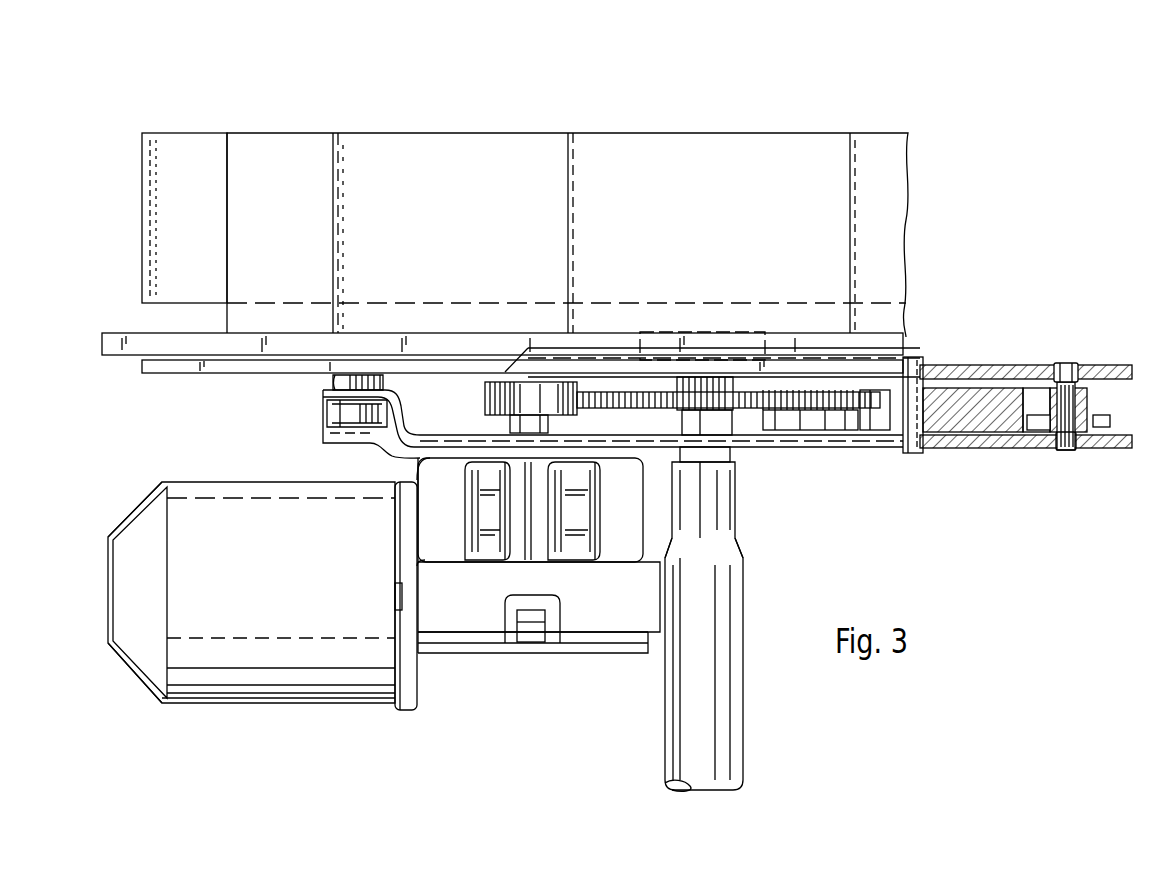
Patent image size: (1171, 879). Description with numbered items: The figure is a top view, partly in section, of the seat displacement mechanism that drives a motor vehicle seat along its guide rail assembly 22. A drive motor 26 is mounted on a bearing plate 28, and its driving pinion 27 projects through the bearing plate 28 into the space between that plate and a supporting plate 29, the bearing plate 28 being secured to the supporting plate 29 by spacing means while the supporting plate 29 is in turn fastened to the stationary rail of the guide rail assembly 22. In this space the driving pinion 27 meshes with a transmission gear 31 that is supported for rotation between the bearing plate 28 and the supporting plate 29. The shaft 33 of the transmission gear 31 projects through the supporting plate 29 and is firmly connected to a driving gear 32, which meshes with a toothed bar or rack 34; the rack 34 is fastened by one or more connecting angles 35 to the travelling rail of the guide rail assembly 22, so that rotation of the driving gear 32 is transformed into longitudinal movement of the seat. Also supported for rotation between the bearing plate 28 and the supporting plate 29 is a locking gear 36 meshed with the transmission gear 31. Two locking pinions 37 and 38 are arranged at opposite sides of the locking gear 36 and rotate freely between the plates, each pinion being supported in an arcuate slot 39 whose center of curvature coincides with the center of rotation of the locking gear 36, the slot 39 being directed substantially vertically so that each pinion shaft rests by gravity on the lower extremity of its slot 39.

The guide rail assembly 22 is at (236, 124).
The drive motor 26 is at (458, 602).
The driving pinion 27 is at (518, 392).
The bearing plate 28 is at (425, 433).
The supporting plate 29 is at (238, 368).
The transmission gear 31 is at (616, 392).
The driving gear 32 is at (705, 335).
The shaft 33 is at (740, 448).
The toothed bar or rack 34 is at (135, 343).
The connecting angle 35 is at (480, 150).
The locking gear 36 is at (998, 400).
The locking pinion 37 is at (1110, 420).
The locking pinion 38 is at (1065, 442).
The arcuate slot 39 is at (1082, 368).